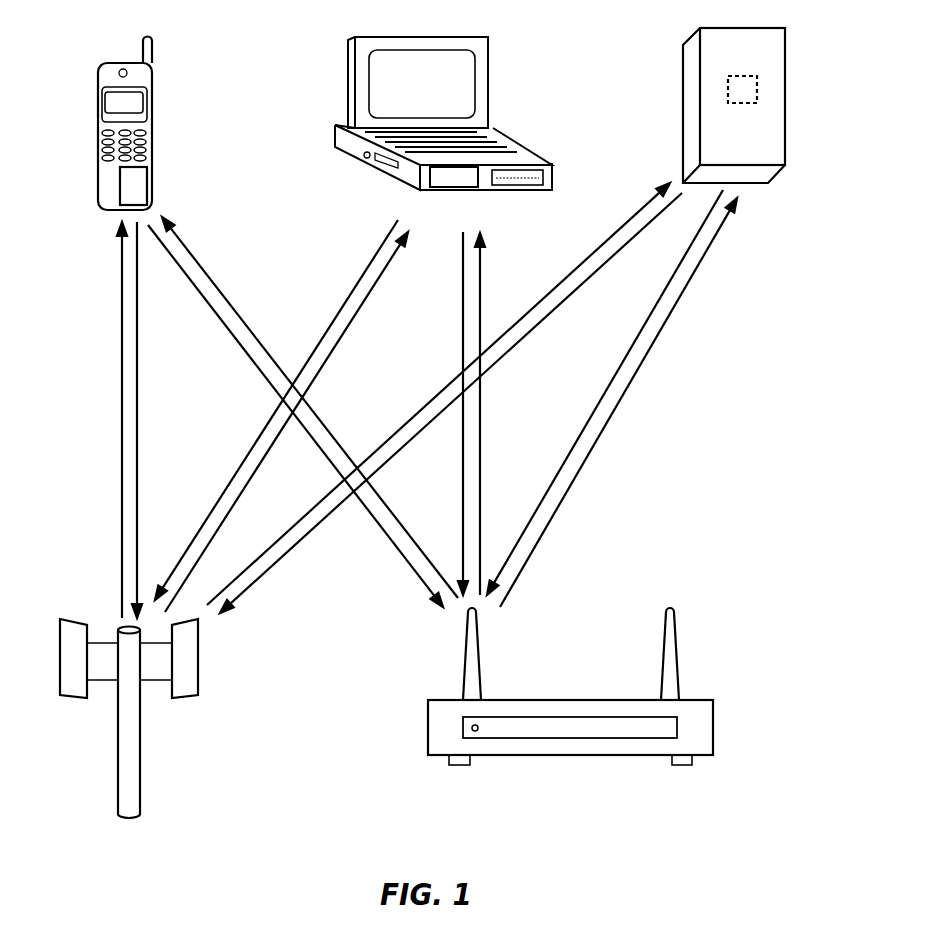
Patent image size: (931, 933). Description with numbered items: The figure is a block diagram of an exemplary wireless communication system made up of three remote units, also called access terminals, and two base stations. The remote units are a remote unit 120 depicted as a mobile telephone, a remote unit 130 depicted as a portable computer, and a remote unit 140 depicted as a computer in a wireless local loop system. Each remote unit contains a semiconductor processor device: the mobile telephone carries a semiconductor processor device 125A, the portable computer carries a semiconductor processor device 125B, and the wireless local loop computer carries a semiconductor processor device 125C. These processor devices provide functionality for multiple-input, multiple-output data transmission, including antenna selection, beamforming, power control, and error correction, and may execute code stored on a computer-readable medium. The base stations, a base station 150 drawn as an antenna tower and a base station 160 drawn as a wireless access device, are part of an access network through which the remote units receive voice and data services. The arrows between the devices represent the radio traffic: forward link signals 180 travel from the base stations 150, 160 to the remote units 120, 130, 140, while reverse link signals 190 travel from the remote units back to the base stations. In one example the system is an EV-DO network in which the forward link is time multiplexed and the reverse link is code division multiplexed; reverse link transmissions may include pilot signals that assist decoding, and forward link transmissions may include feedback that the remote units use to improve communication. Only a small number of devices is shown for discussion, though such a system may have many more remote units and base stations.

The remote unit 120 is at (122, 63).
The semiconductor processor device 125A is at (133, 190).
The remote unit 130 is at (443, 37).
The semiconductor processor device 125B is at (440, 175).
The remote unit 140 is at (737, 28).
The semiconductor processor device 125C is at (760, 90).
The base station 150 is at (140, 744).
The base station 160 is at (698, 700).
The forward link signals 180 is at (122, 408).
The reverse link signals 190 is at (140, 408).